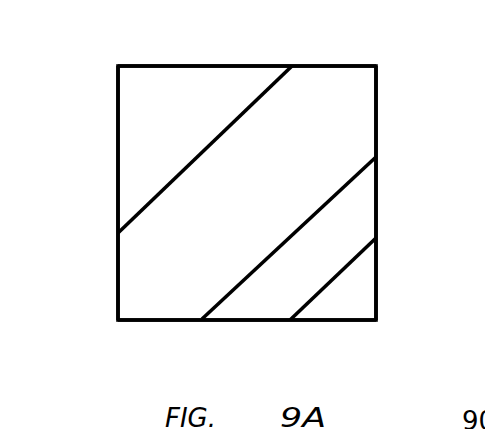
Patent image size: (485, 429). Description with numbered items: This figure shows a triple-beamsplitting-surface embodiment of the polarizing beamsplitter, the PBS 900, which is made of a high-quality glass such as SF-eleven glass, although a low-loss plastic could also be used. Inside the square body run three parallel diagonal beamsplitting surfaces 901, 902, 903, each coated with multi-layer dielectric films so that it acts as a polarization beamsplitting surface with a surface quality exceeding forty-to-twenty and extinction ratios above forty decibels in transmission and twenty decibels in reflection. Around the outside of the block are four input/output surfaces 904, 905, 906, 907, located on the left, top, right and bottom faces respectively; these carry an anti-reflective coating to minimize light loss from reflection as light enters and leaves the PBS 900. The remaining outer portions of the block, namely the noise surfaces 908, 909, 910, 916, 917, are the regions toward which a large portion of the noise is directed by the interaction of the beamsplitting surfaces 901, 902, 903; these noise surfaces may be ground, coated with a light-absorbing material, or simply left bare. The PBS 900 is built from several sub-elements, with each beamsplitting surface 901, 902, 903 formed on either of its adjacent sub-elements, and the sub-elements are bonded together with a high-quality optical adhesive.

The PBS 900 is at (76, 198).
The beamsplitting surface 901 is at (203, 150).
The beamsplitting surface 902 is at (288, 236).
The beamsplitting surface 903 is at (310, 296).
The input/output surface 904 is at (117, 150).
The input/output surface 905 is at (202, 66).
The input/output surface 906 is at (377, 205).
The input/output surface 907 is at (246, 321).
The noise surface 908 is at (337, 66).
The noise surface 909 is at (377, 113).
The noise surface 910 is at (117, 288).
The noise surface 916 is at (377, 284).
The noise surface 917 is at (332, 321).